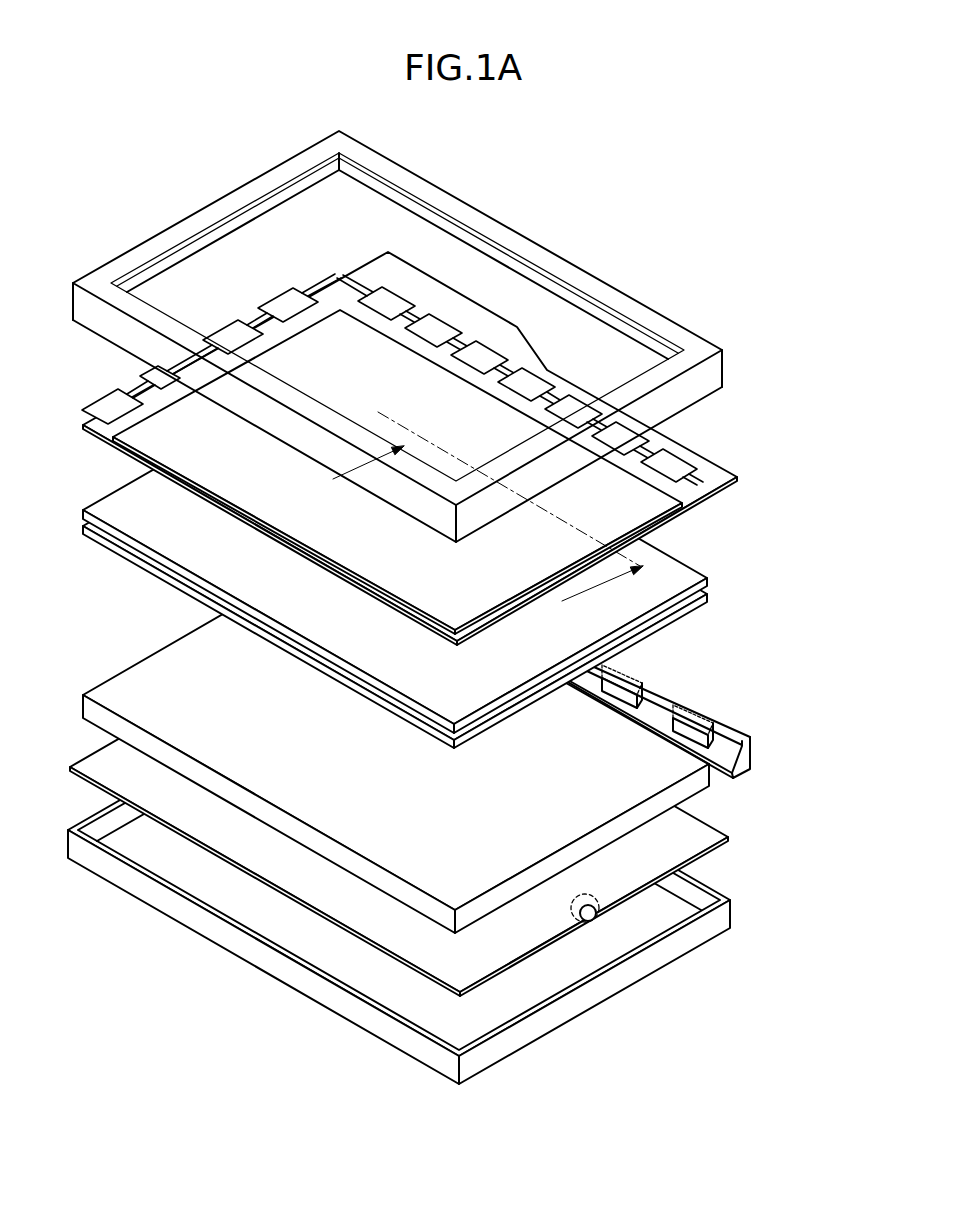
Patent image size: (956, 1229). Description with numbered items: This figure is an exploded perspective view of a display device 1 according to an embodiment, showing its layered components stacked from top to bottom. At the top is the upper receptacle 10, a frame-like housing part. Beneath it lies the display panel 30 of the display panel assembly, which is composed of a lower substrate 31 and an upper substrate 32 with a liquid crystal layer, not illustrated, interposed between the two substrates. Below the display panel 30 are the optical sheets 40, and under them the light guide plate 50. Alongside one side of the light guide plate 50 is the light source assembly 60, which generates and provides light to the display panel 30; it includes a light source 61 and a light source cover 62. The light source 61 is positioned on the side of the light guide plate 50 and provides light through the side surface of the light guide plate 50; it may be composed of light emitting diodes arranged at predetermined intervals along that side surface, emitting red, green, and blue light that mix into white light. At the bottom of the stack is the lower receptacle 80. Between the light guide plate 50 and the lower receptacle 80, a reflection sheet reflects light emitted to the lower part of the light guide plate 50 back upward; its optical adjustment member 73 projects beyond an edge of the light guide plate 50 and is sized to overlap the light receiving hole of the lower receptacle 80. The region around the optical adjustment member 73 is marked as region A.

The display device 1 is at (210, 1014).
The upper receptacle 10 is at (710, 370).
The display panel 30 is at (797, 466).
The lower substrate 31 is at (700, 477).
The upper substrate 32 is at (660, 508).
The optical sheets 40 is at (712, 572).
The light guide plate 50 is at (700, 790).
The light source assembly 60 is at (808, 682).
The light source 61 is at (705, 712).
The light source cover 62 is at (748, 756).
The optical adjustment member 73 is at (590, 923).
The lower receptacle 80 is at (712, 914).
The region A is at (597, 917).